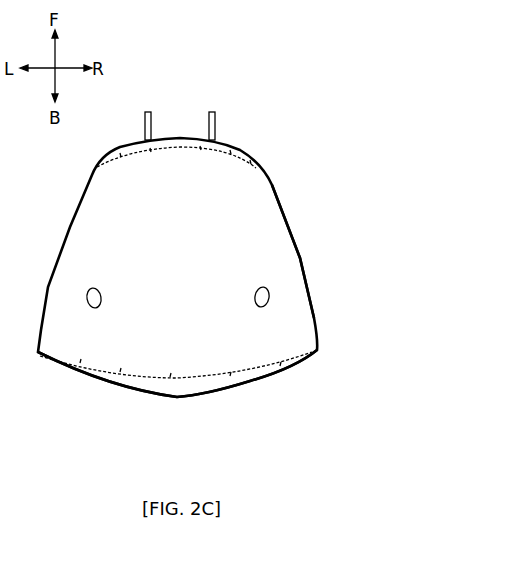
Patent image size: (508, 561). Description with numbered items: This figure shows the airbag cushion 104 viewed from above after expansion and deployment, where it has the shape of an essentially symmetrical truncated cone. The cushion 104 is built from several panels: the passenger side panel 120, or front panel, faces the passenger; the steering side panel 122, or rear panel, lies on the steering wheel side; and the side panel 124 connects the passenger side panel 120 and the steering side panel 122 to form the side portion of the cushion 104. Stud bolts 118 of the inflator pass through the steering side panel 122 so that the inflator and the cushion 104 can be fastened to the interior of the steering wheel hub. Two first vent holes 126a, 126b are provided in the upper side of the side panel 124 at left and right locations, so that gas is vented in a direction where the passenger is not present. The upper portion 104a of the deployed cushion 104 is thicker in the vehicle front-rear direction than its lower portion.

The cushion 104 is at (68, 229).
The upper portion of the cushion 104a is at (183, 399).
The stud bolts 118 is at (148, 112).
The passenger side panel 120 is at (283, 378).
The steering side panel 122 is at (240, 150).
The side panel 124 is at (281, 260).
The first vent hole 126a is at (97, 288).
The first vent hole 126b is at (258, 287).